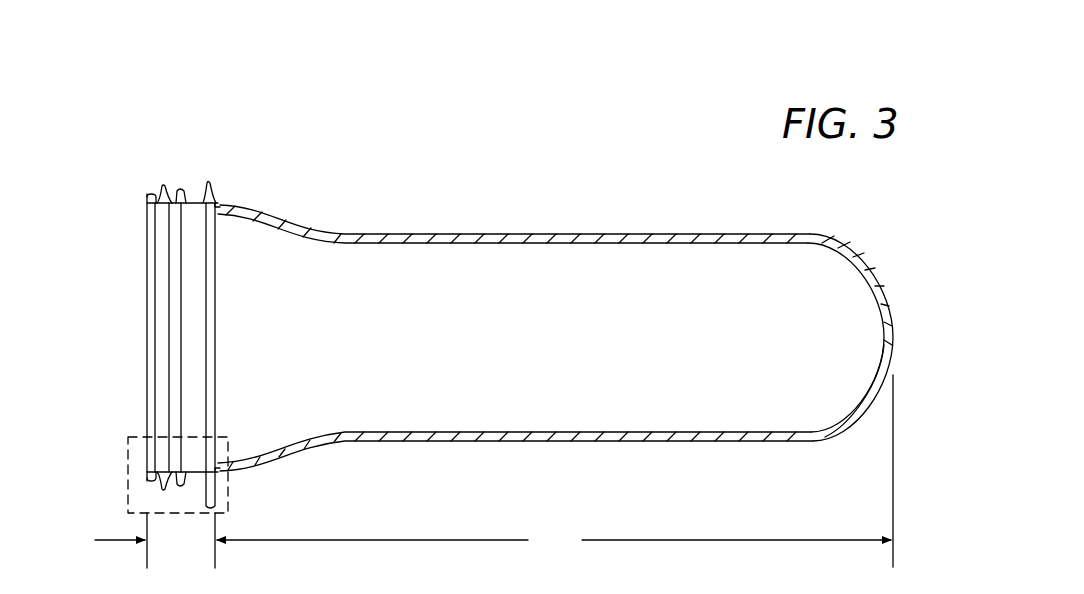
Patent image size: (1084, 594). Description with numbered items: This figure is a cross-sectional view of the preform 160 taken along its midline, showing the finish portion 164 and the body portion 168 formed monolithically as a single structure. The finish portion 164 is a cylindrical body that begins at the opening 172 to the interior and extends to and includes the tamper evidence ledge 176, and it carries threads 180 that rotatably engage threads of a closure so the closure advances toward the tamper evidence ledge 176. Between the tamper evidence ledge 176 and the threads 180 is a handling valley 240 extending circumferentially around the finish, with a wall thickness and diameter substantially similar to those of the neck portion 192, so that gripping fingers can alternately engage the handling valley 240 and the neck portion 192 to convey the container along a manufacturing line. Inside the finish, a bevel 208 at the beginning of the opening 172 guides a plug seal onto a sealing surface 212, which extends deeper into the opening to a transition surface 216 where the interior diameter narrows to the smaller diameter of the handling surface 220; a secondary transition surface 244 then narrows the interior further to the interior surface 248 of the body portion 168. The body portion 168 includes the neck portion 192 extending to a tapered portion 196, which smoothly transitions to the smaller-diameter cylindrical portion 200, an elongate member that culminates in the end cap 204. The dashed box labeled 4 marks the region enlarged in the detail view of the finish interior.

The detail view region for FIG. 4 is at (118, 433).
The preform 160 is at (535, 175).
The finish portion 164 is at (155, 540).
The body portion 168 is at (555, 471).
The opening 172 is at (132, 323).
The tamper evidence ledge 176 is at (209, 183).
The threads 180 is at (166, 192).
The neck portion 192 is at (223, 200).
The tapered portion 196 is at (281, 216).
The cylindrical portion 200 is at (667, 442).
The end cap 204 is at (893, 333).
The bevel 208 is at (150, 246).
The sealing surface 212 is at (163, 297).
The transition surface 216 is at (175, 371).
The handling surface 220 is at (190, 290).
The handling valley 240 is at (197, 200).
The secondary transition surface 244 is at (213, 378).
The interior surface 248 is at (557, 324).